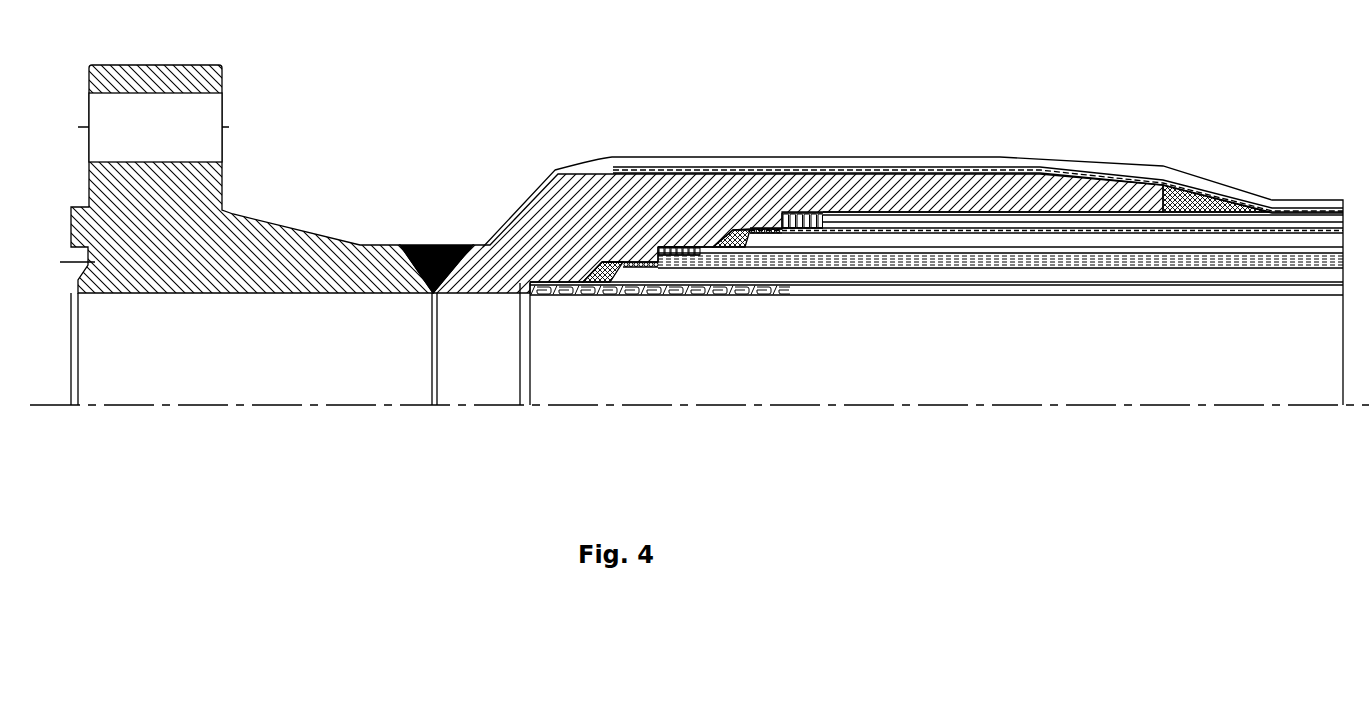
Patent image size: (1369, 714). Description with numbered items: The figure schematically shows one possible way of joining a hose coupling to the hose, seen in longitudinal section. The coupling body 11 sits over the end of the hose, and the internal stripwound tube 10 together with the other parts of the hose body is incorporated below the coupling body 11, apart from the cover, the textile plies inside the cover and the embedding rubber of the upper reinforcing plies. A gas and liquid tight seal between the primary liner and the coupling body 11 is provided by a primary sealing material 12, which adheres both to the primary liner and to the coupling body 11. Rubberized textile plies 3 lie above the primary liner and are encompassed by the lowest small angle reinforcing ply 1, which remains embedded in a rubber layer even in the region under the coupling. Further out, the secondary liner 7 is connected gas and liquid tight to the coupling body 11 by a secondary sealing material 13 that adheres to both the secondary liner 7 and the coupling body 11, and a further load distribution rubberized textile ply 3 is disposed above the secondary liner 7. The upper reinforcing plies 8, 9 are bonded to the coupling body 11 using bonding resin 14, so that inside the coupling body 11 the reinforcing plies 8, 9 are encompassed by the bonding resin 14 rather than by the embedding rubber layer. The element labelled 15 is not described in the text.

The lowest small angle reinforcing ply 1 is at (672, 250).
The rubberized textile plies 3 is at (1108, 226).
The secondary liner 7 is at (928, 242).
The upper reinforcing ply 8 is at (800, 215).
The upper reinforcing ply 9 is at (820, 212).
The internal stripwound tube 10 is at (680, 283).
The coupling body 11 is at (552, 225).
The primary sealing material 12 is at (610, 280).
The secondary sealing material 13 is at (725, 230).
The bonding resin 14 is at (1010, 213).
The inner layer 15 is at (845, 275).